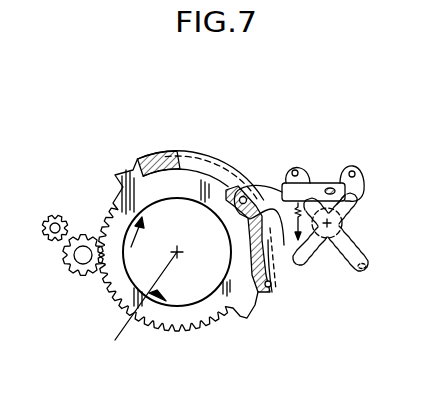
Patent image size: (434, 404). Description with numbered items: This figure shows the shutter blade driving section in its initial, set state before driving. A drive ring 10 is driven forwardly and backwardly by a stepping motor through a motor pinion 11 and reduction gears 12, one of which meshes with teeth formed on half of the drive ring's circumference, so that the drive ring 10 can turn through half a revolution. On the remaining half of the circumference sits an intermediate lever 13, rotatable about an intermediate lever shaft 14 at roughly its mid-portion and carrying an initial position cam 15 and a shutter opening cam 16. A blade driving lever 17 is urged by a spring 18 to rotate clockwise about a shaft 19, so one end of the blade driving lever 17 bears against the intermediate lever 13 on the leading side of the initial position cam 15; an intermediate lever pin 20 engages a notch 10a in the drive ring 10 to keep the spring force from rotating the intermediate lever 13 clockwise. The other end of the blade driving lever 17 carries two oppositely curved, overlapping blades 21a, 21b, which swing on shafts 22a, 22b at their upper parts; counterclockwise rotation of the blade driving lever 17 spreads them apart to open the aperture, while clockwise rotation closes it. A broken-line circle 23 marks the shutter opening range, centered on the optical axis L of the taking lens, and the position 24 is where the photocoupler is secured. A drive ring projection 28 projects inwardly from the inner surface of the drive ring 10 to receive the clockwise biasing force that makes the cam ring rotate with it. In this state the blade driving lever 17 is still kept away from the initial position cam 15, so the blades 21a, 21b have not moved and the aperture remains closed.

The drive ring 10 is at (115, 176).
The notch 10a is at (257, 290).
The motor pinion 11 is at (46, 220).
The reduction gears 12 is at (83, 285).
The intermediate lever 13 is at (198, 150).
The intermediate lever shaft 14 is at (235, 185).
The initial position cam 15 is at (250, 190).
The shutter opening cam 16 is at (178, 152).
The blade driving lever 17 is at (270, 186).
The spring 18 is at (295, 242).
The shaft 19 is at (280, 184).
The intermediate lever pin 20 is at (272, 292).
The blade 21a is at (355, 192).
The blade 21b is at (340, 224).
The shaft 22a is at (352, 168).
The shaft 22b is at (294, 170).
The shutter opening range circle 23 is at (345, 237).
The photocoupler position 24 is at (368, 273).
The drive ring projection 28 is at (162, 296).
The optical axis L is at (138, 310).